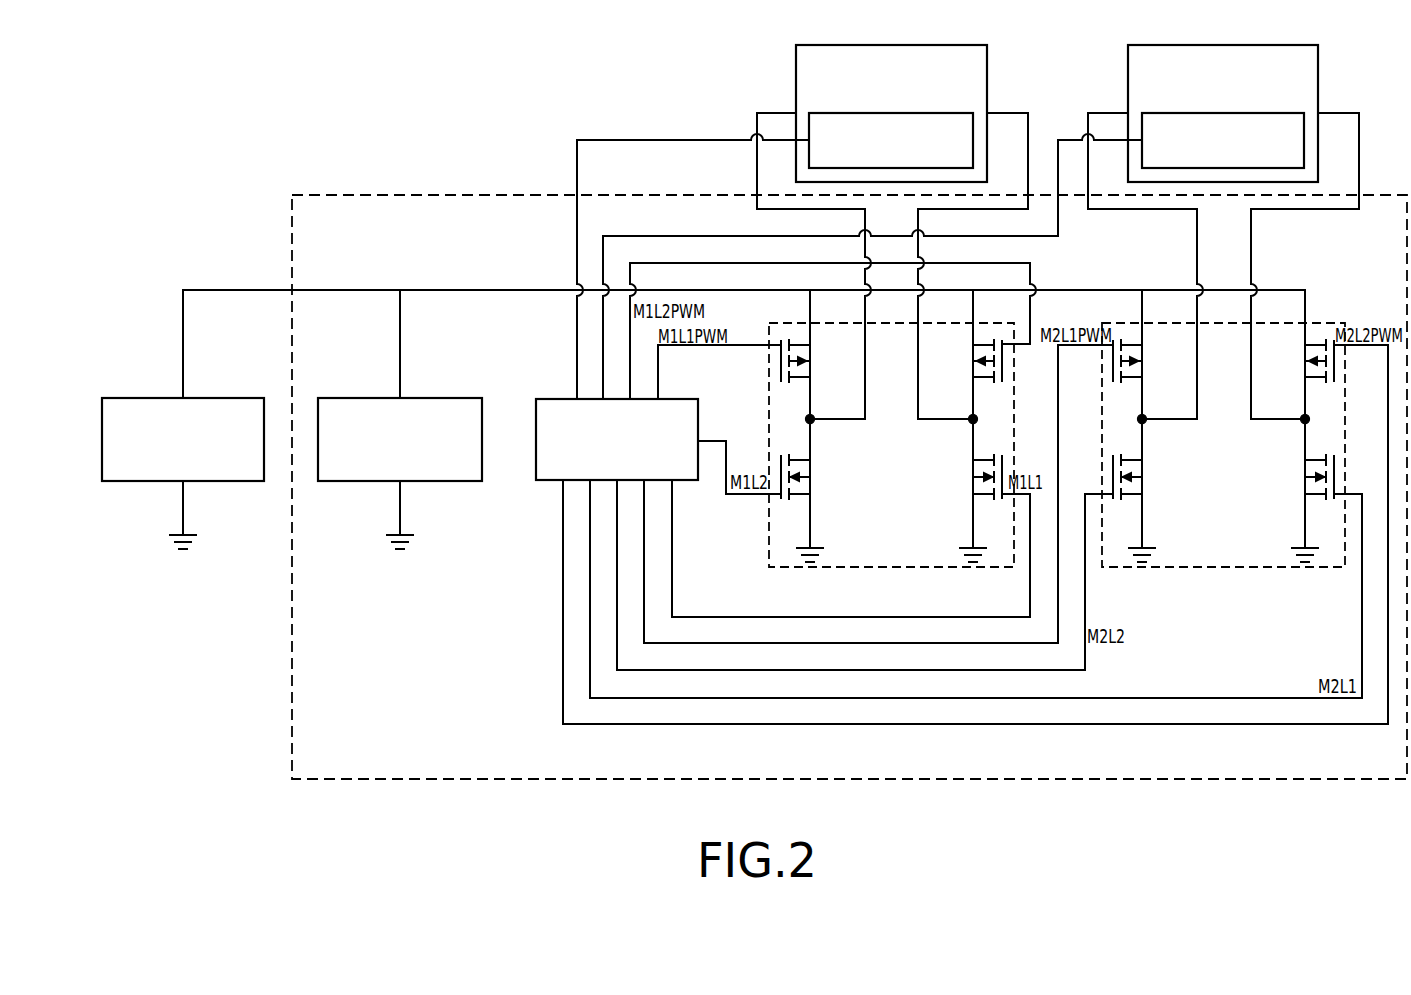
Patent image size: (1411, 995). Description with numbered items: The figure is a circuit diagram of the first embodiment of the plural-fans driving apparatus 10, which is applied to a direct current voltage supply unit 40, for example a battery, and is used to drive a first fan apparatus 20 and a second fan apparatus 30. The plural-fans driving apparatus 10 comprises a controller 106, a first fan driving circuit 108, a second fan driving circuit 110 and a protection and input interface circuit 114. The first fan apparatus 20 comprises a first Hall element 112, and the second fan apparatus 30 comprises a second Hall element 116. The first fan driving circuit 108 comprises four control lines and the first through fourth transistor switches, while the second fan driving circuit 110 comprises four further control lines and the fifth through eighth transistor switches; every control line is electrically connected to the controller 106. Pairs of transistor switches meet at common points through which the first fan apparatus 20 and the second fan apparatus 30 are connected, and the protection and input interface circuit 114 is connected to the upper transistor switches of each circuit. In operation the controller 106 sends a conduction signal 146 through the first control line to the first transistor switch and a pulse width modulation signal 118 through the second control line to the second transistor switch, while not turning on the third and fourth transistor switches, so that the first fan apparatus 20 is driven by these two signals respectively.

The plural-fans driving apparatus 10 is at (1017, 779).
The first fan apparatus 20 is at (982, 68).
The second fan apparatus 30 is at (1314, 68).
The direct current voltage supply unit 40 is at (174, 405).
The controller 106 is at (570, 405).
The first fan driving circuit 108 is at (893, 567).
The second fan driving circuit 110 is at (1225, 567).
The first Hall element 112 is at (950, 114).
The protection and input interface circuit 114 is at (392, 405).
The second Hall element 116 is at (1281, 114).
The pulse width modulation signal 118 is at (725, 263).
The conduction signal 146 is at (713, 437).